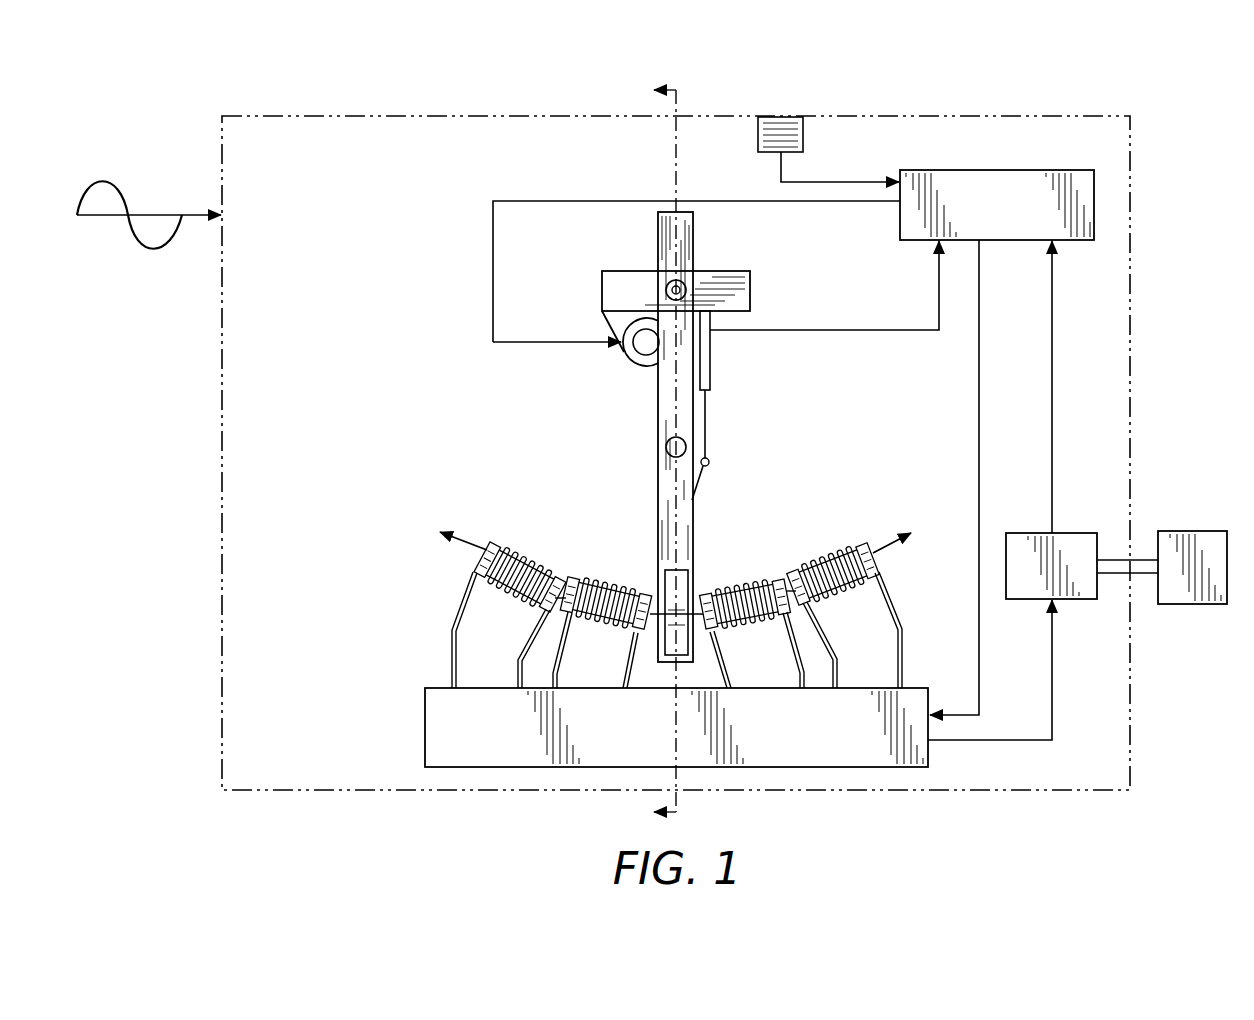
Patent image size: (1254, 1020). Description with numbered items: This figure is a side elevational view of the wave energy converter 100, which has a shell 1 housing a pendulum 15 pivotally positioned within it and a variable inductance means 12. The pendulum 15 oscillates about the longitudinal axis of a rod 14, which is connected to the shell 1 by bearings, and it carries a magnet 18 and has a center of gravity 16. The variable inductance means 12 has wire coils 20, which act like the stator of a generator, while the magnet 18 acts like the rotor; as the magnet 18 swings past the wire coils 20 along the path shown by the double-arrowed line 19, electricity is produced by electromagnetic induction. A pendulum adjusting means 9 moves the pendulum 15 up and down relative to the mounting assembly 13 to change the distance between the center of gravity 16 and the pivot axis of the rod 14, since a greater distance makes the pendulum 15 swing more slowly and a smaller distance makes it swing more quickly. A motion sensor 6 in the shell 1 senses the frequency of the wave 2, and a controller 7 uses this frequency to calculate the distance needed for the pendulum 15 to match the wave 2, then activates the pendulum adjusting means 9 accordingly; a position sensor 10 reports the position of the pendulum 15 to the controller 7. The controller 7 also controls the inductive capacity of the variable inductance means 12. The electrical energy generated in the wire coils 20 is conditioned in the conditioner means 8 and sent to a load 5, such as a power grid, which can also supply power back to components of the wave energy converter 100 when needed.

The wave energy converter 100 is at (422, 98).
The shell 1 is at (1130, 348).
The wave 2 is at (114, 216).
The load 5 is at (1193, 604).
The motion sensor 6 is at (785, 117).
The controller 7 is at (1040, 170).
The conditioner means 8 is at (1062, 533).
The pendulum adjusting means 9 is at (632, 360).
The position sensor 10 is at (708, 340).
The variable inductance means 12 is at (437, 688).
The mounting assembly 13 is at (740, 272).
The rod 14 is at (672, 285).
The pendulum 15 is at (657, 513).
The center of gravity 16 is at (686, 445).
The magnet 18 is at (683, 590).
The double-arrowed line 19 is at (893, 548).
The wire coils 20 is at (508, 550).